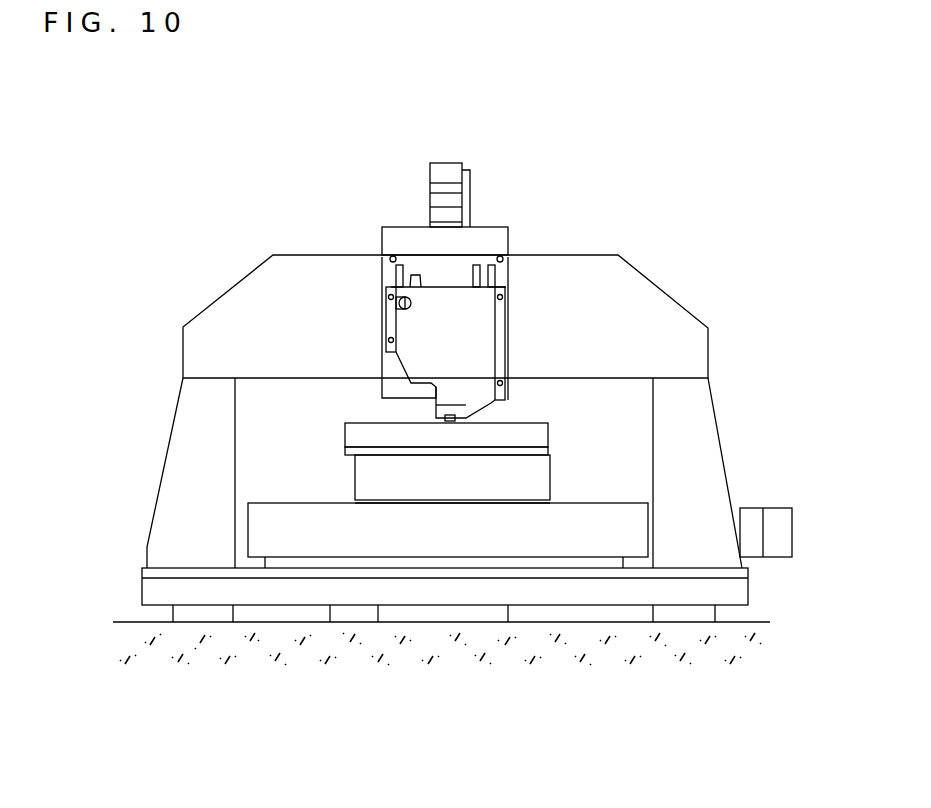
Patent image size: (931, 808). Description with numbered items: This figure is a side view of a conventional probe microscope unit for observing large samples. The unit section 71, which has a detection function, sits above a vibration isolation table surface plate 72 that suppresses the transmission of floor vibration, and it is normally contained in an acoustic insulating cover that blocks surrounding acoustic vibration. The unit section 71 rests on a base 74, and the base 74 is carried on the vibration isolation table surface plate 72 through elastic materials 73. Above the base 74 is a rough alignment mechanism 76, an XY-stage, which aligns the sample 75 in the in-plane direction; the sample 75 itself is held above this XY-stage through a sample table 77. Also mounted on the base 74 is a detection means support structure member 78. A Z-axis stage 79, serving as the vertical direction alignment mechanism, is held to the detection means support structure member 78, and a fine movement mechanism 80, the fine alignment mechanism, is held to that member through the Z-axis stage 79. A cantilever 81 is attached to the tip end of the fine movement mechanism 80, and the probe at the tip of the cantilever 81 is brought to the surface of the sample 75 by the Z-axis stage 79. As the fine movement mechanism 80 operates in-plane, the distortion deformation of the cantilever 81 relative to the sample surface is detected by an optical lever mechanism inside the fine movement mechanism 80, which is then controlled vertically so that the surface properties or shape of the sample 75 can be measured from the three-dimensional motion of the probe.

The unit section 71 is at (277, 178).
The vibration isolation table surface plate 72 is at (673, 653).
The elastic materials 73 is at (708, 612).
The base 74 is at (730, 590).
The sample 75 is at (528, 430).
The rough alignment mechanism 76 is at (555, 525).
The sample table 77 is at (560, 458).
The detection means support structure member 78 is at (188, 492).
The Z-axis stage 79 is at (483, 237).
The fine movement mechanism 80 is at (425, 340).
The cantilever 81 is at (445, 420).